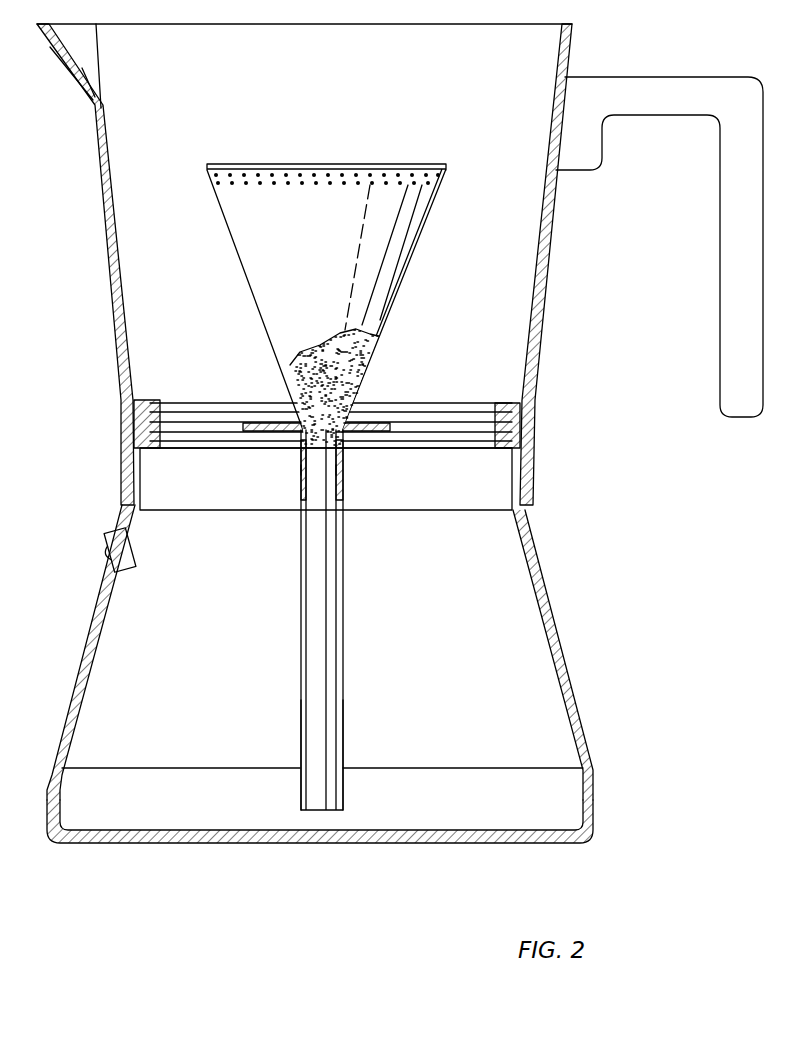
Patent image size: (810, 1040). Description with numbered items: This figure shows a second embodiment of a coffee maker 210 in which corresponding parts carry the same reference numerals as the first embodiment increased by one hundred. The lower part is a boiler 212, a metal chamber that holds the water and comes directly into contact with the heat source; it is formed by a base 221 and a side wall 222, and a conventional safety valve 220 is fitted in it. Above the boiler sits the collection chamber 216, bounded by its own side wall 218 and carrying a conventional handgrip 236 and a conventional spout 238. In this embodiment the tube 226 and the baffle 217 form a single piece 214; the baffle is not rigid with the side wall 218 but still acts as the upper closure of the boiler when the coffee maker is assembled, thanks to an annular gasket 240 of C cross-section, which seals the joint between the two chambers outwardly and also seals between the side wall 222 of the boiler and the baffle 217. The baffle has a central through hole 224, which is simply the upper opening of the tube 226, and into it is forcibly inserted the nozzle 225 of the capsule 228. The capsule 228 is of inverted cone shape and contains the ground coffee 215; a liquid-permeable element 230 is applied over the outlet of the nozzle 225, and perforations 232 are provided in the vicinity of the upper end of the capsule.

The coffee maker 210 is at (381, 454).
The boiler 212 is at (578, 690).
The one piece 214 is at (345, 655).
The coffee grounds 215 is at (335, 368).
The collection chamber 216 is at (104, 238).
The baffle 217 is at (213, 435).
The side wall of the collection chamber 218 is at (553, 276).
The safety valve 220 is at (103, 558).
The base 221 is at (537, 845).
The side wall of the boiler 222 is at (72, 698).
The central through hole 224 is at (345, 432).
The nozzle 225 is at (303, 470).
The tube 226 is at (343, 733).
The capsule 228 is at (410, 262).
The liquid-permeable element 230 is at (340, 473).
The perforations 232 is at (272, 186).
The handgrip 236 is at (720, 220).
The spout 238 is at (65, 73).
The annular gasket 240 is at (160, 413).